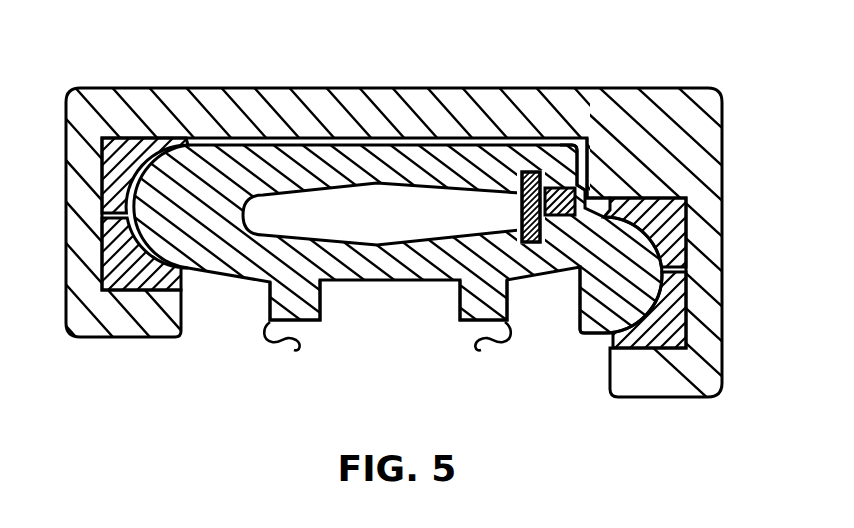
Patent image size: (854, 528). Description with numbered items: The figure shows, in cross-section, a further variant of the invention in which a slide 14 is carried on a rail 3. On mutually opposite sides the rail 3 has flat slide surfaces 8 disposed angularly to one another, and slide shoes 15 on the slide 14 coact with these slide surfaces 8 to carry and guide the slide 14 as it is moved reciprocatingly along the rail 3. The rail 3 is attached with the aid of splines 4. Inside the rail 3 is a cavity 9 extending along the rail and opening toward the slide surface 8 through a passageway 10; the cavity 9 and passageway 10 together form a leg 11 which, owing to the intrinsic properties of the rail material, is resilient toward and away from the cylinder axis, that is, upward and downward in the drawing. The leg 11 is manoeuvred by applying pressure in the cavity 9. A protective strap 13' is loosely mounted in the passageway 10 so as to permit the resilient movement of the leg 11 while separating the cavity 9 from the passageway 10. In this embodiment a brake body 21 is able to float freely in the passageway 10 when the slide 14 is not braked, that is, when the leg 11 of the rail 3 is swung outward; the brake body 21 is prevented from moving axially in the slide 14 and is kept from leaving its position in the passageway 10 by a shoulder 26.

The rail 3 is at (222, 155).
The splines 4 is at (287, 342).
The slide surfaces 8 is at (135, 290).
The cavity 9 is at (379, 228).
The passageway 10 is at (580, 273).
The leg 11 is at (558, 163).
The protective strap 13' is at (438, 264).
The slide 14 is at (428, 106).
The slide shoes 15 is at (112, 176).
The brake body 21 is at (566, 222).
The shoulder 26 is at (597, 188).